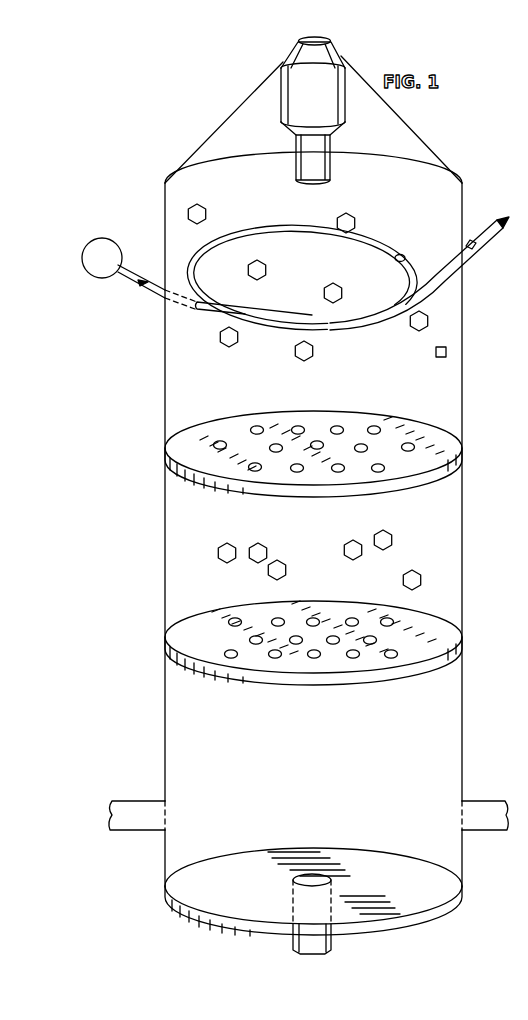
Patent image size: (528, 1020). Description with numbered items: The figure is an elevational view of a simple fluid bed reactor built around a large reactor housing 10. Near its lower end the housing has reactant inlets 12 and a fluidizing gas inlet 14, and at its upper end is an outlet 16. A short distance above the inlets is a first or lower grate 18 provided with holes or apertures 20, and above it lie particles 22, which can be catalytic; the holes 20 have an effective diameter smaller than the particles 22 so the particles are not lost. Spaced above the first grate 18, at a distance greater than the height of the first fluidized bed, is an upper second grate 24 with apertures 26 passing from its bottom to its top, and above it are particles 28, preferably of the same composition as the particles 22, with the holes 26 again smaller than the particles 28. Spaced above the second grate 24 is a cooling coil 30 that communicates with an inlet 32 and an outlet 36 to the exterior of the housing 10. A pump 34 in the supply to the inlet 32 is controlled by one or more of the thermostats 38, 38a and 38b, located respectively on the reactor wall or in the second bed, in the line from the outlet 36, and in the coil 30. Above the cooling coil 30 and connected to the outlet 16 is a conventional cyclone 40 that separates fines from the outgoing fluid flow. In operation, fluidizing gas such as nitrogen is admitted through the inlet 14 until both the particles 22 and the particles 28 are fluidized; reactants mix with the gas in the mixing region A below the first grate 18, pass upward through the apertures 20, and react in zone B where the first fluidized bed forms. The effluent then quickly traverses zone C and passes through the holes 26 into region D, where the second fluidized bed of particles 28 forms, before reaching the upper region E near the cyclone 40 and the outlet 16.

The reactor housing 10 is at (463, 575).
The reactant inlets 12 is at (128, 812).
The fluidizing gas inlet 14 is at (332, 942).
The outlet 16 is at (305, 43).
The first or lower grate 18 is at (350, 680).
The holes or apertures 20 is at (386, 621).
The particles 22 is at (350, 550).
The upper second grate 24 is at (411, 487).
The apertures 26 is at (297, 430).
The particles 28 is at (226, 343).
The cooling coil 30 is at (253, 226).
The inlet 32 is at (192, 307).
The pump 34 is at (99, 238).
The outlet 36 is at (466, 265).
The thermostat 38 is at (449, 352).
The thermostat 38a is at (474, 243).
The thermostat 38b is at (402, 256).
The cyclone 40 is at (305, 90).
The mixing region A is at (200, 722).
The region of first fluidized bed B is at (196, 590).
The zone between the grates C is at (212, 508).
The region of second fluidized bed D is at (178, 356).
The zone E is at (230, 150).